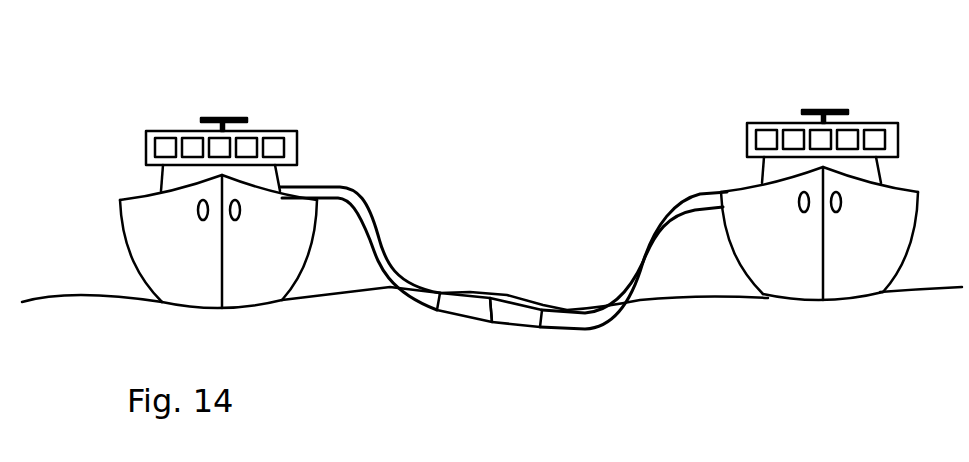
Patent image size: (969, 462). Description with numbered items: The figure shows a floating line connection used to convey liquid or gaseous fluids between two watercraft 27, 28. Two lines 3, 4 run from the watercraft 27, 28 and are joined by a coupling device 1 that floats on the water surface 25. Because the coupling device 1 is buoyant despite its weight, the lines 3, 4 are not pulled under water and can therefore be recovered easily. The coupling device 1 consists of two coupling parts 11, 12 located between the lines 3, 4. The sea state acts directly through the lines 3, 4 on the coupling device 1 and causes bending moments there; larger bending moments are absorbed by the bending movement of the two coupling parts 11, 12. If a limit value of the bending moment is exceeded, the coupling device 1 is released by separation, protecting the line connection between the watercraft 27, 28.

The coupling device 1 is at (503, 216).
The line 3 is at (360, 193).
The line 4 is at (680, 203).
The coupling part 11 is at (470, 292).
The coupling part 12 is at (543, 278).
The water surface 25 is at (93, 290).
The watercraft 27 is at (283, 130).
The watercraft 28 is at (885, 122).